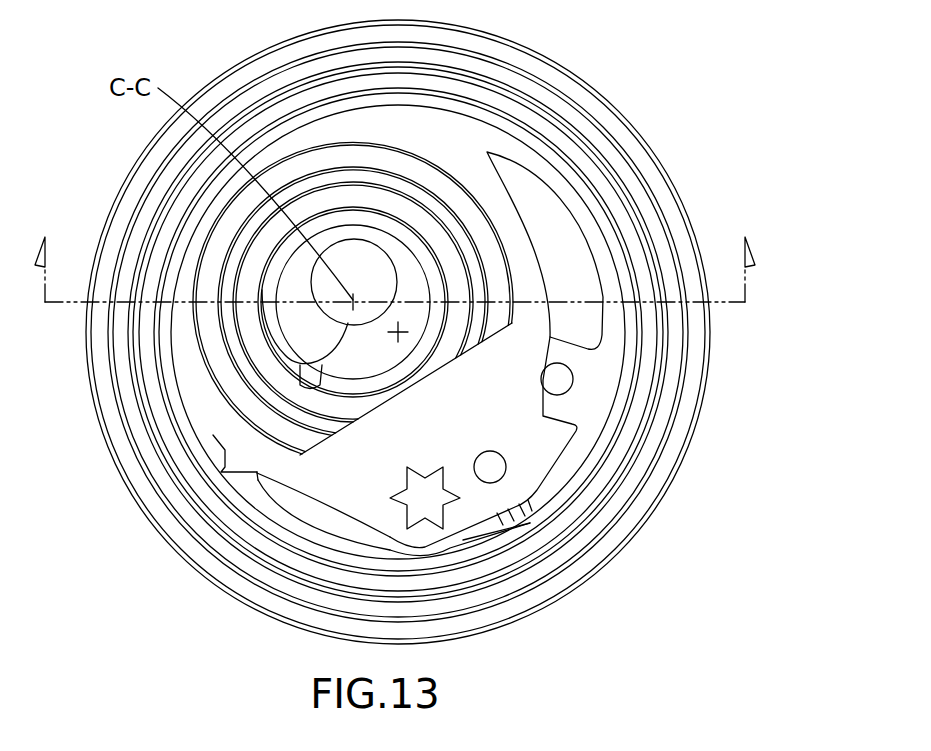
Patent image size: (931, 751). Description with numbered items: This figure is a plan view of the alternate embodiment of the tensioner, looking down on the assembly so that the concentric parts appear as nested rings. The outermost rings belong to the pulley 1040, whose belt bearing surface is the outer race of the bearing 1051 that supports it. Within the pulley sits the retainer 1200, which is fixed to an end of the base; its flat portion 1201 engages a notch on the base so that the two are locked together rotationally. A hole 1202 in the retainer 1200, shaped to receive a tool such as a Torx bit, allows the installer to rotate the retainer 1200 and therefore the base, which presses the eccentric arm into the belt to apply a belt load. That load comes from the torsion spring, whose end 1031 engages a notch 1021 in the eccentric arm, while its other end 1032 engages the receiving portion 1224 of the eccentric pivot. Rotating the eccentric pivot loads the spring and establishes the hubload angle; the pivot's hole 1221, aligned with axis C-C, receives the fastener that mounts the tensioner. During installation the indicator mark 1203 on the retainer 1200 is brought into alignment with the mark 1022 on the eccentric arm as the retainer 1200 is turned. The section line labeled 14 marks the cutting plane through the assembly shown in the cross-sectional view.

The section line 14- 14 is at (404, 245).
The notch 1021 is at (540, 503).
The mark 1022 is at (215, 488).
The end of spring 1031 is at (527, 527).
The end of spring 1032 is at (298, 308).
The pulley 1040 is at (670, 170).
The bearing 1051 is at (597, 135).
The retainer 1200 is at (513, 408).
The flat portion 1201 is at (573, 380).
The hole 1202 is at (430, 510).
The indicator mark 1203 is at (233, 487).
The hole 1221 is at (352, 262).
The receiving portion 1224 is at (213, 435).